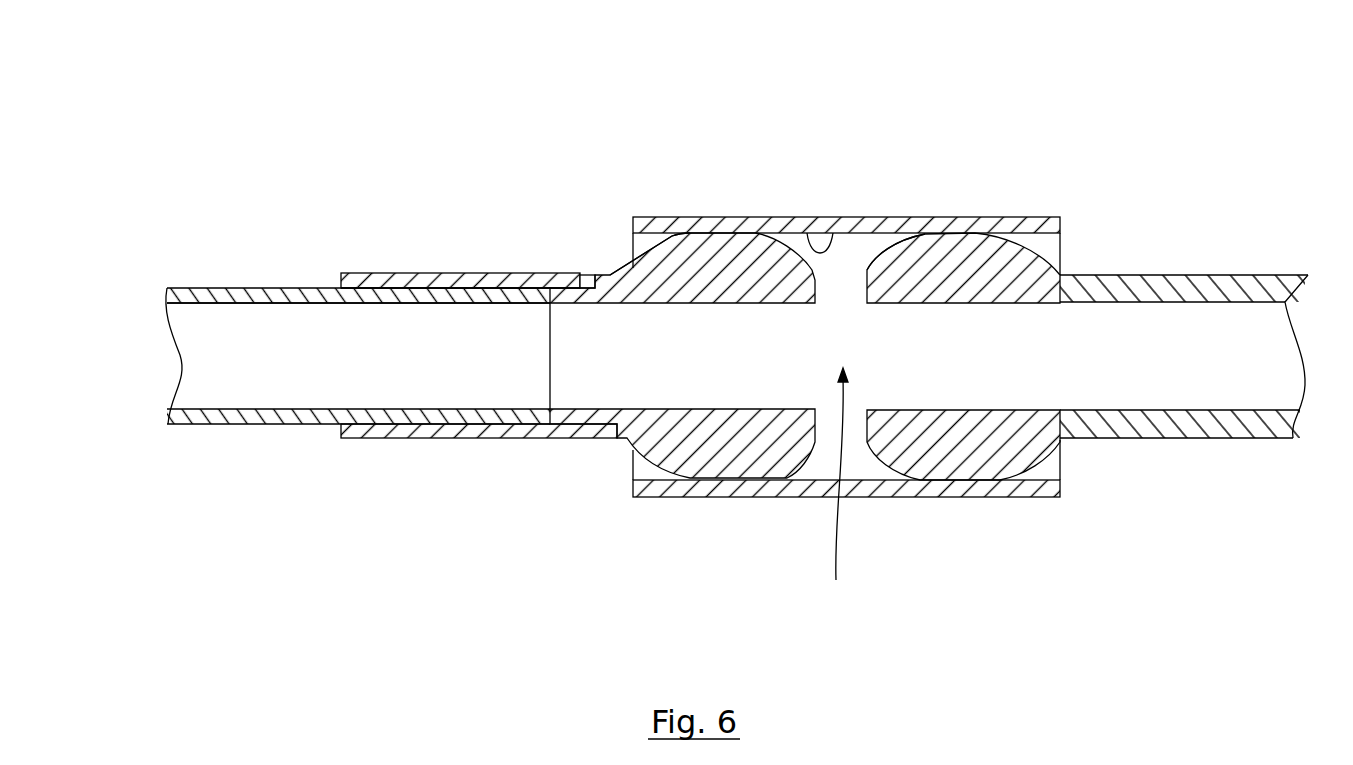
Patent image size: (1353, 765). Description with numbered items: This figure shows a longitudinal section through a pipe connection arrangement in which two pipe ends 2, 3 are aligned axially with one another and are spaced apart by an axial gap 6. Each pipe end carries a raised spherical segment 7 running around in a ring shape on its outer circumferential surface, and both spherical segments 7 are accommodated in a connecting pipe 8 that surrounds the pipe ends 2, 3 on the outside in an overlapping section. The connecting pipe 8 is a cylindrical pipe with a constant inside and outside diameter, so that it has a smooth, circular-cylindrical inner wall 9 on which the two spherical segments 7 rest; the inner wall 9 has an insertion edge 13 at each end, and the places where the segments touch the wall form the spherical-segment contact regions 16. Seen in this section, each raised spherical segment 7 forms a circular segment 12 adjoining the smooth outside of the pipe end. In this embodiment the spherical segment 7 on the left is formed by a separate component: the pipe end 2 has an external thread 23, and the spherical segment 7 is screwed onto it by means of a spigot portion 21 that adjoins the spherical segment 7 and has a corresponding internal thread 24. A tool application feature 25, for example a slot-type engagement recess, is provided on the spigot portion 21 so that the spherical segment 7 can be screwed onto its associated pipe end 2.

The pipe end 2 is at (257, 288).
The pipe end 3 is at (1160, 275).
The axial gap 6 is at (837, 494).
The raised spherical segment 7 is at (727, 258).
The connecting pipe 8 is at (863, 218).
The inner wall 9 is at (814, 231).
The circular segment 12 is at (678, 252).
The insertion edge 13 is at (633, 493).
The spherical-segment contact region 16 is at (720, 497).
The spigot portion 21 is at (445, 274).
The external thread 23 is at (378, 288).
The internal thread 24 is at (461, 306).
The tool application feature 25 is at (587, 275).